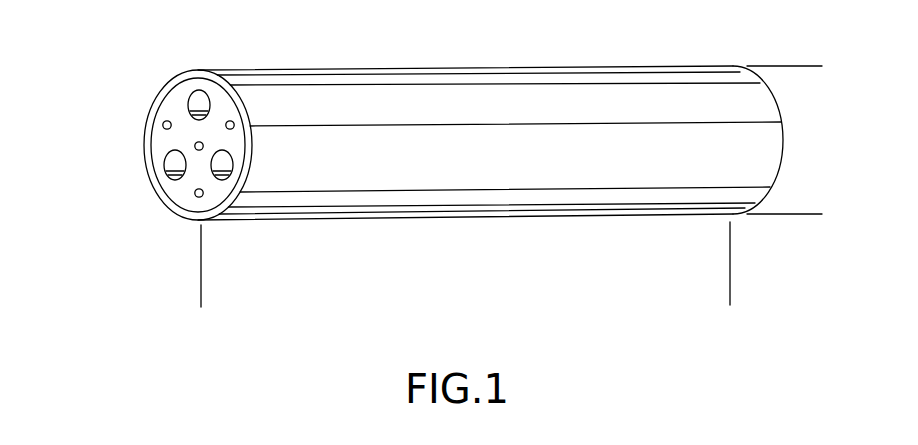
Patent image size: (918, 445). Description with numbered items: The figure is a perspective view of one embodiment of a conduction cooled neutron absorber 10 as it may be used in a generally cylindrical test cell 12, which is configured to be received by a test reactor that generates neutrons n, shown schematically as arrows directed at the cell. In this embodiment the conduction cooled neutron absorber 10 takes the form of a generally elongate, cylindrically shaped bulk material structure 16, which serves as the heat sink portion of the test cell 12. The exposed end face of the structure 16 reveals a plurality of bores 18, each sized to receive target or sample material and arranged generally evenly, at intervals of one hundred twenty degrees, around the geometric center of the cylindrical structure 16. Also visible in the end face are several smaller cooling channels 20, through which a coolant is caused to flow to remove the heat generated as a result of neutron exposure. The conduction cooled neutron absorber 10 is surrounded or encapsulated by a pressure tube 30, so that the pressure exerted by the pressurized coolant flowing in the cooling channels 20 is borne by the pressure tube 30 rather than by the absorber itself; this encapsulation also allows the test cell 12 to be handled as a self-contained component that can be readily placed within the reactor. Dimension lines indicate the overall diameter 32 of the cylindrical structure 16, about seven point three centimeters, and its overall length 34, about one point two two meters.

The conduction cooled neutron absorber 10 is at (421, 131).
The test cell 12 is at (349, 58).
The cylindrically shaped bulk material structure 16 is at (163, 190).
The bores 18 is at (189, 104).
The cooling channels 20 is at (197, 197).
The pressure tube 30 is at (245, 71).
The overall diameter 32 is at (805, 77).
The overall length 34 is at (719, 289).
The neutrons n is at (435, 58).